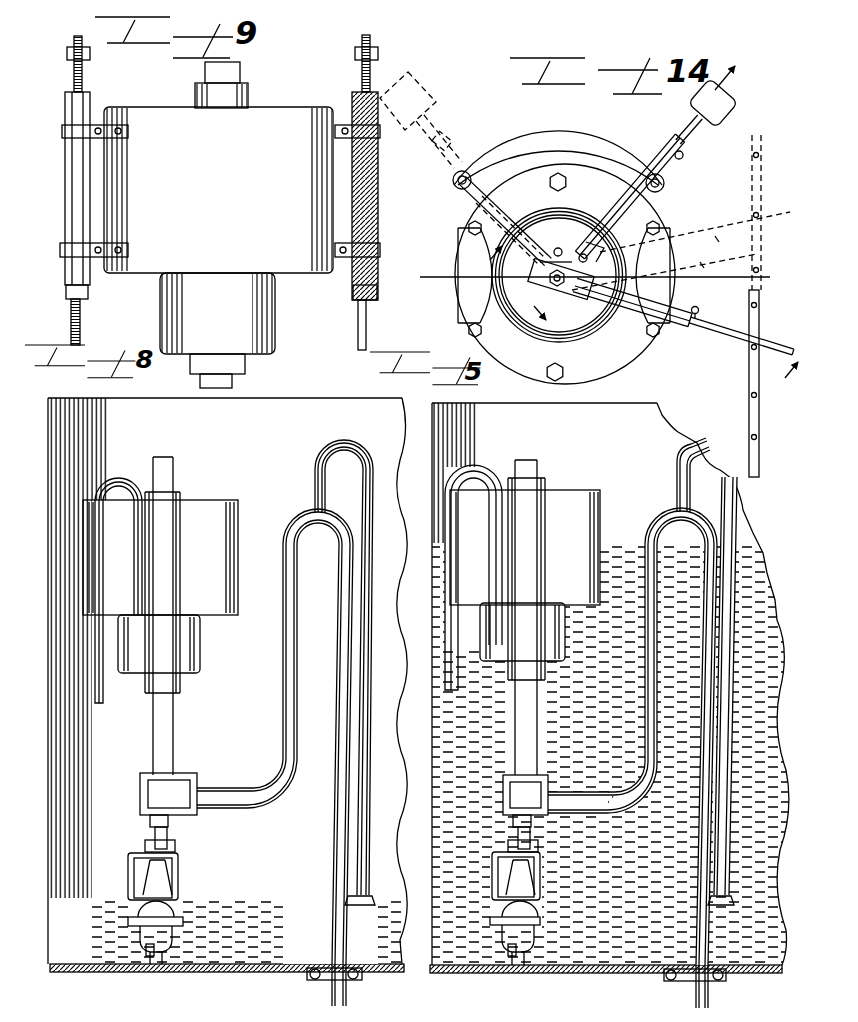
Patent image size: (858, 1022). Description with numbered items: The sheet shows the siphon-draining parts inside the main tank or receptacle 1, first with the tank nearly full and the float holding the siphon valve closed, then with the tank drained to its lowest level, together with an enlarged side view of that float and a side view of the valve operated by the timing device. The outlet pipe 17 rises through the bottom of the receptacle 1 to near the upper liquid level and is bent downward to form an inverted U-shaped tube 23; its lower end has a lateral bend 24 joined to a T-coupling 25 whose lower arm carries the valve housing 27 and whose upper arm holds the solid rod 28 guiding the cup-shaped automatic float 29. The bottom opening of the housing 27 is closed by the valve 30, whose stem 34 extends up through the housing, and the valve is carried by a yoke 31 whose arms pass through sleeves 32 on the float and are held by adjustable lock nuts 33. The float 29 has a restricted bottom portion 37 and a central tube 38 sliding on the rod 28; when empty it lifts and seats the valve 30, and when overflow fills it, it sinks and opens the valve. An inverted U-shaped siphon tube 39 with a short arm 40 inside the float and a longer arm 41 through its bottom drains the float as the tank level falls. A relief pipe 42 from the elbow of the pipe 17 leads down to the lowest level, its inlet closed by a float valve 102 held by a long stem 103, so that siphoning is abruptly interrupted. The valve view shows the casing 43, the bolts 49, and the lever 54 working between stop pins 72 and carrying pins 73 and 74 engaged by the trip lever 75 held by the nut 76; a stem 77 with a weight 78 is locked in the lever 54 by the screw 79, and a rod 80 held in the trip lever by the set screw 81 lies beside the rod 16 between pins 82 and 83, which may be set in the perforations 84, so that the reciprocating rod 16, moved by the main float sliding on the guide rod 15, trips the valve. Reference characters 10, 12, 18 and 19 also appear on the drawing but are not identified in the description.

In FIG. 8, the main tank 1 is at (190, 984).
In FIG. 5, the main tank 1 is at (540, 1000).
In FIG. 5, the valve assembly 10 is at (512, 808).
In FIG. 14, the pivot 12 is at (459, 187).
In FIG. 14, the rod 15 is at (594, 371).
In FIG. 14, the rod 16 is at (749, 418).
In FIG. 8, the outlet pipe 17 is at (346, 990).
In FIG. 5, the outlet pipe 17 is at (692, 999).
In FIG. 14, the direction arrow 18 is at (608, 179).
In FIG. 14, the direction arrow 19 is at (797, 381).
In FIG. 8, the inverted U-shaped tube 23 is at (283, 670).
In FIG. 8, the lateral bend 24 is at (225, 793).
In FIG. 8, the T-coupling 25 is at (140, 790).
In FIG. 8, the valve housing 27 is at (178, 878).
In FIG. 9, the solid rod 28 is at (240, 72).
In FIG. 8, the solid rod 28 is at (160, 728).
In FIG. 9, the automatic float 29 is at (218, 190).
In FIG. 8, the automatic float 29 is at (240, 526).
In FIG. 5, the automatic float 29 is at (561, 492).
In FIG. 8, the valve 30 is at (172, 906).
In FIG. 9, the yoke 31 is at (358, 335).
In FIG. 9, the sleeves 32 is at (72, 200).
In FIG. 9, the lock nuts 33 is at (66, 53).
In FIG. 8, the stem 34 is at (166, 856).
In FIG. 9, the restricted bottom portion 37 is at (217, 330).
In FIG. 8, the restricted bottom portion 37 is at (200, 651).
In FIG. 9, the central tube 38 is at (210, 93).
In FIG. 8, the central tube 38 is at (172, 531).
In FIG. 8, the siphon tube 39 is at (118, 488).
In FIG. 5, the siphon tube 39 is at (487, 470).
In FIG. 8, the short arm 40 is at (142, 529).
In FIG. 5, the short arm 40 is at (500, 535).
In FIG. 8, the longer arm 41 is at (127, 571).
In FIG. 5, the longer arm 41 is at (457, 594).
In FIG. 8, the relief pipe 42 is at (366, 770).
In FIG. 5, the relief pipe 42 is at (725, 680).
In FIG. 14, the casing 43 is at (570, 240).
In FIG. 14, the bolts 49 is at (551, 367).
In FIG. 14, the lever 54 is at (646, 170).
In FIG. 14, the pins 72 is at (665, 184).
In FIG. 14, the pin 73 is at (557, 248).
In FIG. 14, the pin 74 is at (602, 260).
In FIG. 14, the trip lever 75 is at (676, 330).
In FIG. 14, the nut 76 is at (559, 290).
In FIG. 14, the stem 77 is at (688, 121).
In FIG. 14, the weight 78 is at (722, 112).
In FIG. 14, the screw 79 is at (684, 156).
In FIG. 14, the rod 80 is at (738, 345).
In FIG. 14, the set screw 81 is at (699, 312).
In FIG. 14, the pin 82 is at (757, 347).
In FIG. 14, the pin 83 is at (757, 438).
In FIG. 14, the perforations 84 is at (757, 305).
In FIG. 8, the float valve 102 is at (362, 894).
In FIG. 5, the float valve 102 is at (732, 903).
In FIG. 8, the long stem 103 is at (373, 812).
In FIG. 5, the long stem 103 is at (729, 871).